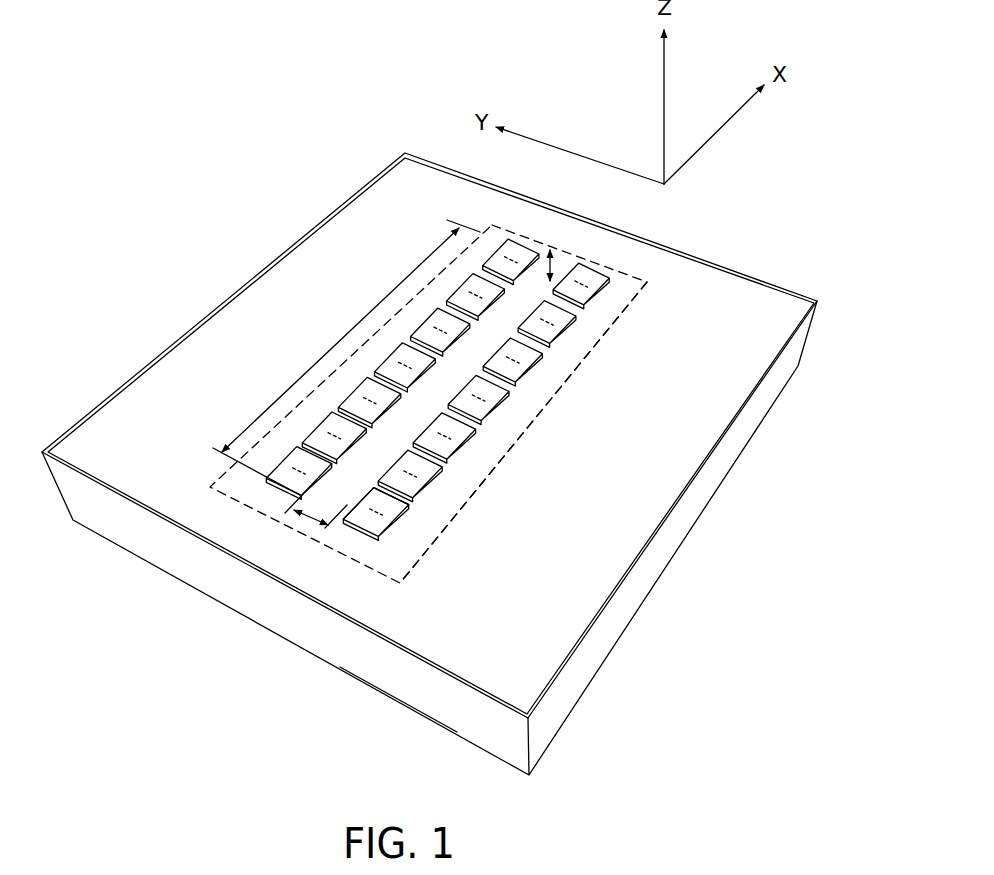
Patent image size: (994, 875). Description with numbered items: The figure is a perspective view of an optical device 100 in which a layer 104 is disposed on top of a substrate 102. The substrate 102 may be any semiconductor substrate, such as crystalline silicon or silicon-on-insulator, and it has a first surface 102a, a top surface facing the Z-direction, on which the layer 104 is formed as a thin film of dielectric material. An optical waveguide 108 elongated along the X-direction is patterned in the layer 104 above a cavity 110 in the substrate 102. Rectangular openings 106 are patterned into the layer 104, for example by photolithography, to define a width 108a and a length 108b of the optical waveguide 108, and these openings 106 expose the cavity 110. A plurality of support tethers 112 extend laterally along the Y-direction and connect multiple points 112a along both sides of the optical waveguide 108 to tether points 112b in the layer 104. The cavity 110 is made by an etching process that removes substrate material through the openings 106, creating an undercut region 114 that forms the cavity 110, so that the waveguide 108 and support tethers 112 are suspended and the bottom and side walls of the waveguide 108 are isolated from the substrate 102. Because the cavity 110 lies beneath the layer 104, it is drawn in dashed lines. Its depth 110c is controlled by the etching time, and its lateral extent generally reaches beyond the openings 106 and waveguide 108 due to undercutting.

The optical device 100 is at (203, 110).
The substrate 102 is at (160, 552).
The first surface 102a is at (118, 495).
The layer 104 is at (420, 662).
The openings 106 is at (298, 473).
The optical waveguide 108 is at (453, 380).
The width 108a is at (309, 518).
The length 108b is at (343, 338).
The cavity 110 is at (603, 318).
The depth 110c is at (554, 268).
The support tethers 112 is at (392, 492).
The points 112a is at (387, 490).
The tether points 112b is at (393, 493).
The undercut region 114 is at (570, 357).